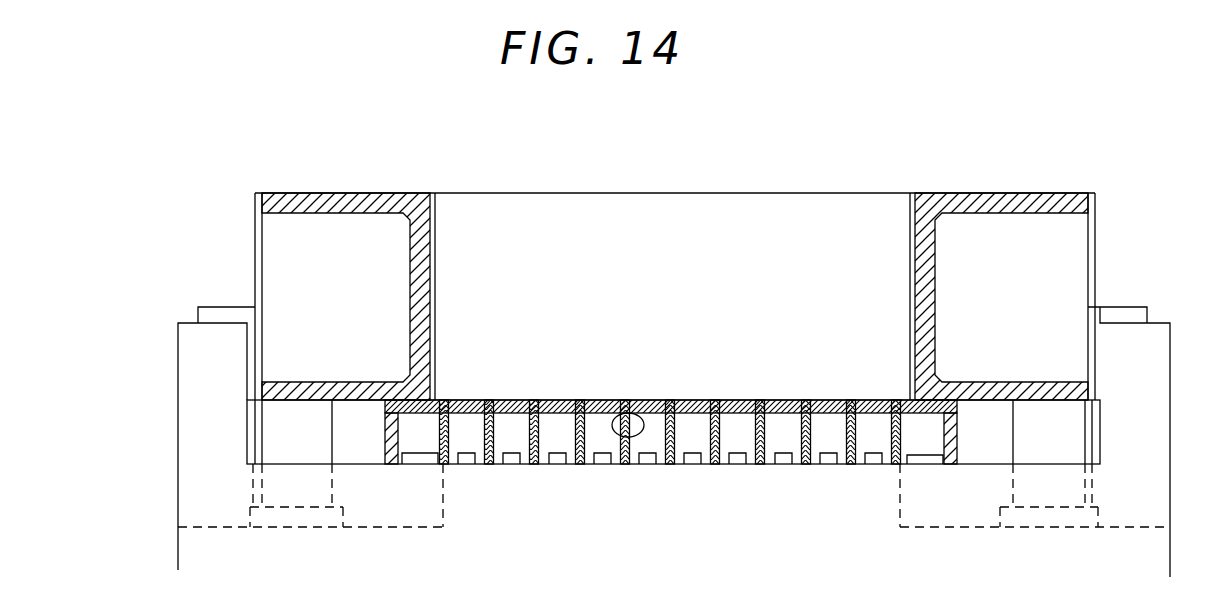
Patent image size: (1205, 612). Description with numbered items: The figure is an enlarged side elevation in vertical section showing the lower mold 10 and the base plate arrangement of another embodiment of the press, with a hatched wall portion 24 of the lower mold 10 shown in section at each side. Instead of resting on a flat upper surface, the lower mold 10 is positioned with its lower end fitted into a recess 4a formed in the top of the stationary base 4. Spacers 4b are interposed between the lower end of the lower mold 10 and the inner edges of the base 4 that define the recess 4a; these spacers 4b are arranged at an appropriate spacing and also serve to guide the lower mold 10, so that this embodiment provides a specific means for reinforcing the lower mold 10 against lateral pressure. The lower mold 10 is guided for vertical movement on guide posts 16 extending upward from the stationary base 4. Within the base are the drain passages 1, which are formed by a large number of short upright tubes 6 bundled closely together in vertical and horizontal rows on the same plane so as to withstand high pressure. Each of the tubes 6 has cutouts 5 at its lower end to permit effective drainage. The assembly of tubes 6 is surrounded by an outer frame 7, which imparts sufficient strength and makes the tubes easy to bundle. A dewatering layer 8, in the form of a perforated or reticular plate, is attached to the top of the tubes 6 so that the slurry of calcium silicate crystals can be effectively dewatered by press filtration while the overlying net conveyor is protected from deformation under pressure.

The lower mold 10 is at (632, 193).
The hatched lining of housing 24 is at (983, 205).
The guide posts 16 is at (1033, 450).
The stationary base 4 is at (1147, 350).
The spacers 4b is at (1103, 317).
The recess 4a is at (1098, 440).
The dewatering layer 8 is at (540, 401).
The outer frame 7 is at (386, 440).
The drain passages 1 is at (737, 429).
The cutouts 5 is at (691, 466).
The short upright tubes 6 is at (641, 400).